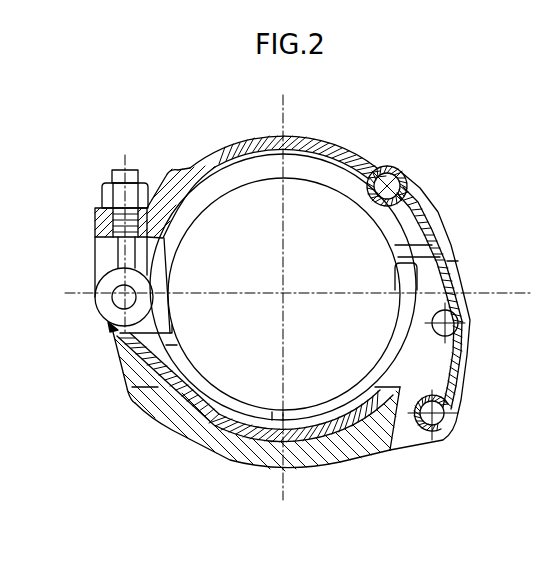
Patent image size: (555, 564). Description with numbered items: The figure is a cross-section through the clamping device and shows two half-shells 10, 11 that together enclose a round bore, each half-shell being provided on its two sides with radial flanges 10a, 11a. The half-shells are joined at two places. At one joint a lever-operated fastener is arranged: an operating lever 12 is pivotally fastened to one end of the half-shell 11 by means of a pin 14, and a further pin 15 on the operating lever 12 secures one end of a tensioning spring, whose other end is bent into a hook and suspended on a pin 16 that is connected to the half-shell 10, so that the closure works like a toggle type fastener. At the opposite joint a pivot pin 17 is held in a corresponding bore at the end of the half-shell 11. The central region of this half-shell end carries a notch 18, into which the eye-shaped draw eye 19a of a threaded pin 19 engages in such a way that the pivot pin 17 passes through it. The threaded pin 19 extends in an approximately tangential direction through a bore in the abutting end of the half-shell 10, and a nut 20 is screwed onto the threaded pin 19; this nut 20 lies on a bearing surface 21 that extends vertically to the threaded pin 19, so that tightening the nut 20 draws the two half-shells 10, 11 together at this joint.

The half-shell 10 is at (302, 137).
The radial flange 10a is at (323, 178).
The half-shell 11 is at (315, 433).
The radial flange 11a is at (258, 415).
The operating lever 12 is at (355, 445).
The pin 14 is at (470, 329).
The pin 15 is at (447, 422).
The pin 16 is at (410, 183).
The pivot pin 17 is at (115, 298).
The notch 18 is at (142, 325).
The threaded pin 19 is at (118, 254).
The draw eye 19a is at (113, 328).
The nut 20 is at (100, 190).
The bearing surface 21 is at (150, 195).